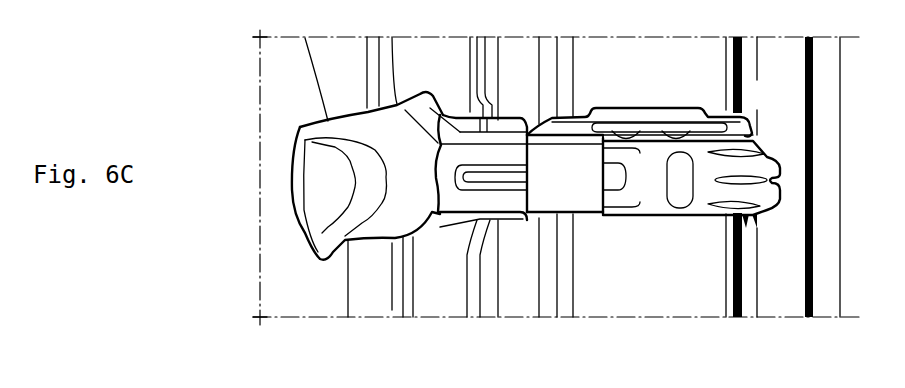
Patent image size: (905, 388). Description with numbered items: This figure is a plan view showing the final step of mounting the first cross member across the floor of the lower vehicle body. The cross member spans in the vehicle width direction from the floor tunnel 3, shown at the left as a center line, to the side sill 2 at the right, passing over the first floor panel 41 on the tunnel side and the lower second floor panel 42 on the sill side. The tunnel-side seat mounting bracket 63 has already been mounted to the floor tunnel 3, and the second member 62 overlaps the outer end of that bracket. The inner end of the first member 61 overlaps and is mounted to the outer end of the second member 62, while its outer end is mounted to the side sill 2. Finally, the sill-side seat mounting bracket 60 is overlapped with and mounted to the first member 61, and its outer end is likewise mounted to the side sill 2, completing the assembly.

The side sill 2 is at (783, 52).
The floor tunnel 3 is at (272, 85).
The first floor panel 41 is at (441, 53).
The second floor panel 42 is at (646, 52).
The sill-side seat mounting bracket 60 is at (682, 207).
The first member 61 is at (580, 197).
The second member 62 is at (503, 200).
The tunnel-side seat mounting bracket 63 is at (322, 198).